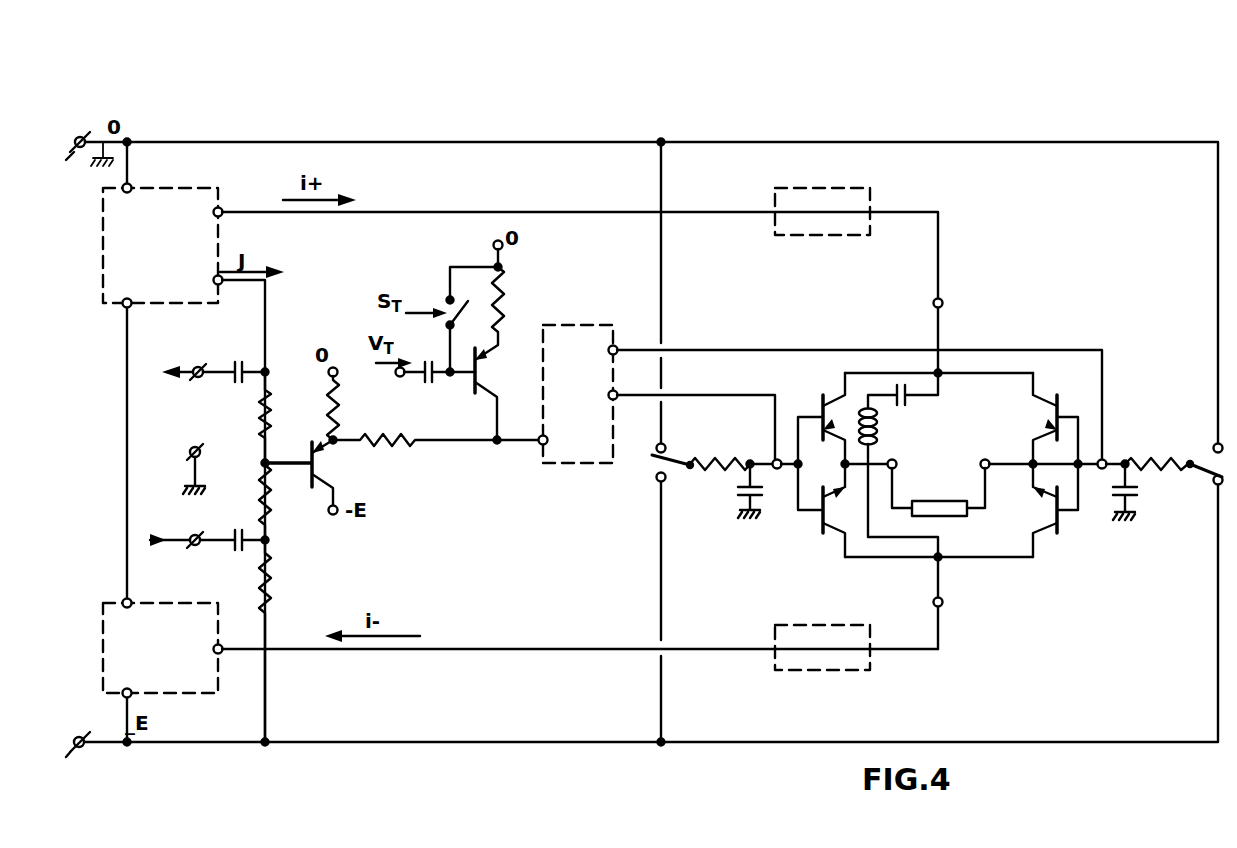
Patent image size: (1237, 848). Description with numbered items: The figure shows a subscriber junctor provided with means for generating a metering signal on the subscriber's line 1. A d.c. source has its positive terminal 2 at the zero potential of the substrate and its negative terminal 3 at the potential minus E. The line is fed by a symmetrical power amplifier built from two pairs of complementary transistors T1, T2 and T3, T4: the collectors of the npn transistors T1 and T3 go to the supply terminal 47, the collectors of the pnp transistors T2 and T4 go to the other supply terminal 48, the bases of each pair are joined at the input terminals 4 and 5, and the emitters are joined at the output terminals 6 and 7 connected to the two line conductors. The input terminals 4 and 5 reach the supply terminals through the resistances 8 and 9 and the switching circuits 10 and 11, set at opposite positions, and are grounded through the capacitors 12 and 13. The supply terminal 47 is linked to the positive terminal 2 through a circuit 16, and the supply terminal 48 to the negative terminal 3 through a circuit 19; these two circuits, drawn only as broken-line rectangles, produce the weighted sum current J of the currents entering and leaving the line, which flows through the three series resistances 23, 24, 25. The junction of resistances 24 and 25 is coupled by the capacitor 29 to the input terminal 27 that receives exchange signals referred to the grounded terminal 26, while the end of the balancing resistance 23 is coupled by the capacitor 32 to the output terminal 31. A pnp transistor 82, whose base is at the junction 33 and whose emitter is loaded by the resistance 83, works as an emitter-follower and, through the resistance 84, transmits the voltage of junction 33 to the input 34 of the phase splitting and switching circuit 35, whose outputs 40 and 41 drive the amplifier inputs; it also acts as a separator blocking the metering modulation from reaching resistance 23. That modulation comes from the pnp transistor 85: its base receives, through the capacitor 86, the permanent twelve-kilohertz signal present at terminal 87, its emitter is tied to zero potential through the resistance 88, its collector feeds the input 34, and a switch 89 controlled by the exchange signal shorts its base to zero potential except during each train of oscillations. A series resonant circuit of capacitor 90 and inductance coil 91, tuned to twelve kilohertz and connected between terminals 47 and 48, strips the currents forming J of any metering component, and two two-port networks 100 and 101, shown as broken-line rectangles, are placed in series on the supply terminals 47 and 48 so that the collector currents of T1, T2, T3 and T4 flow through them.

The subscriber's line 1 is at (946, 501).
The positive terminal 2 is at (83, 137).
The negative terminal 3 is at (84, 750).
The input terminal 4 is at (780, 470).
The input terminal 5 is at (1105, 472).
The output terminal 6 is at (898, 464).
The output terminal 7 is at (980, 464).
The resistance 8 is at (735, 455).
The resistance 9 is at (1158, 452).
The switching circuit 10 is at (666, 454).
The switching circuit 11 is at (1203, 460).
The capacitor 12 is at (742, 495).
The capacitor 13 is at (1136, 492).
The circuit 16 is at (184, 188).
The circuit 19 is at (158, 603).
The resistance 23 is at (270, 424).
The resistance 24 is at (272, 528).
The resistance 25 is at (273, 582).
The terminal 26 is at (200, 447).
The input terminal 27 is at (200, 535).
The capacitor 29 is at (244, 552).
The output terminal 31 is at (194, 367).
The capacitor 32 is at (235, 366).
The junction 33 is at (262, 464).
The input 34 is at (540, 447).
The phase splitting and switching circuit 35 is at (568, 325).
The output terminal of block 35 40 is at (618, 395).
The output terminal of block 35 41 is at (618, 350).
The supply terminal 47 is at (942, 307).
The supply terminal 48 is at (942, 607).
The pnp transistor 82 is at (326, 467).
The resistance 83 is at (338, 408).
The resistance 84 is at (383, 452).
The pnp transistor 85 is at (482, 374).
The capacitor 86 is at (436, 380).
The terminal 87 is at (399, 378).
The resistance 88 is at (505, 300).
The switch 89 is at (473, 319).
The capacitor 90 is at (920, 404).
The inductance coil 91 is at (878, 440).
The two port network 100 is at (840, 188).
The two port network 101 is at (843, 670).
The npn transistor T1 is at (835, 418).
The pnp transistor T2 is at (835, 510).
The npn transistor T3 is at (1032, 418).
The pnp transistor T4 is at (1032, 510).